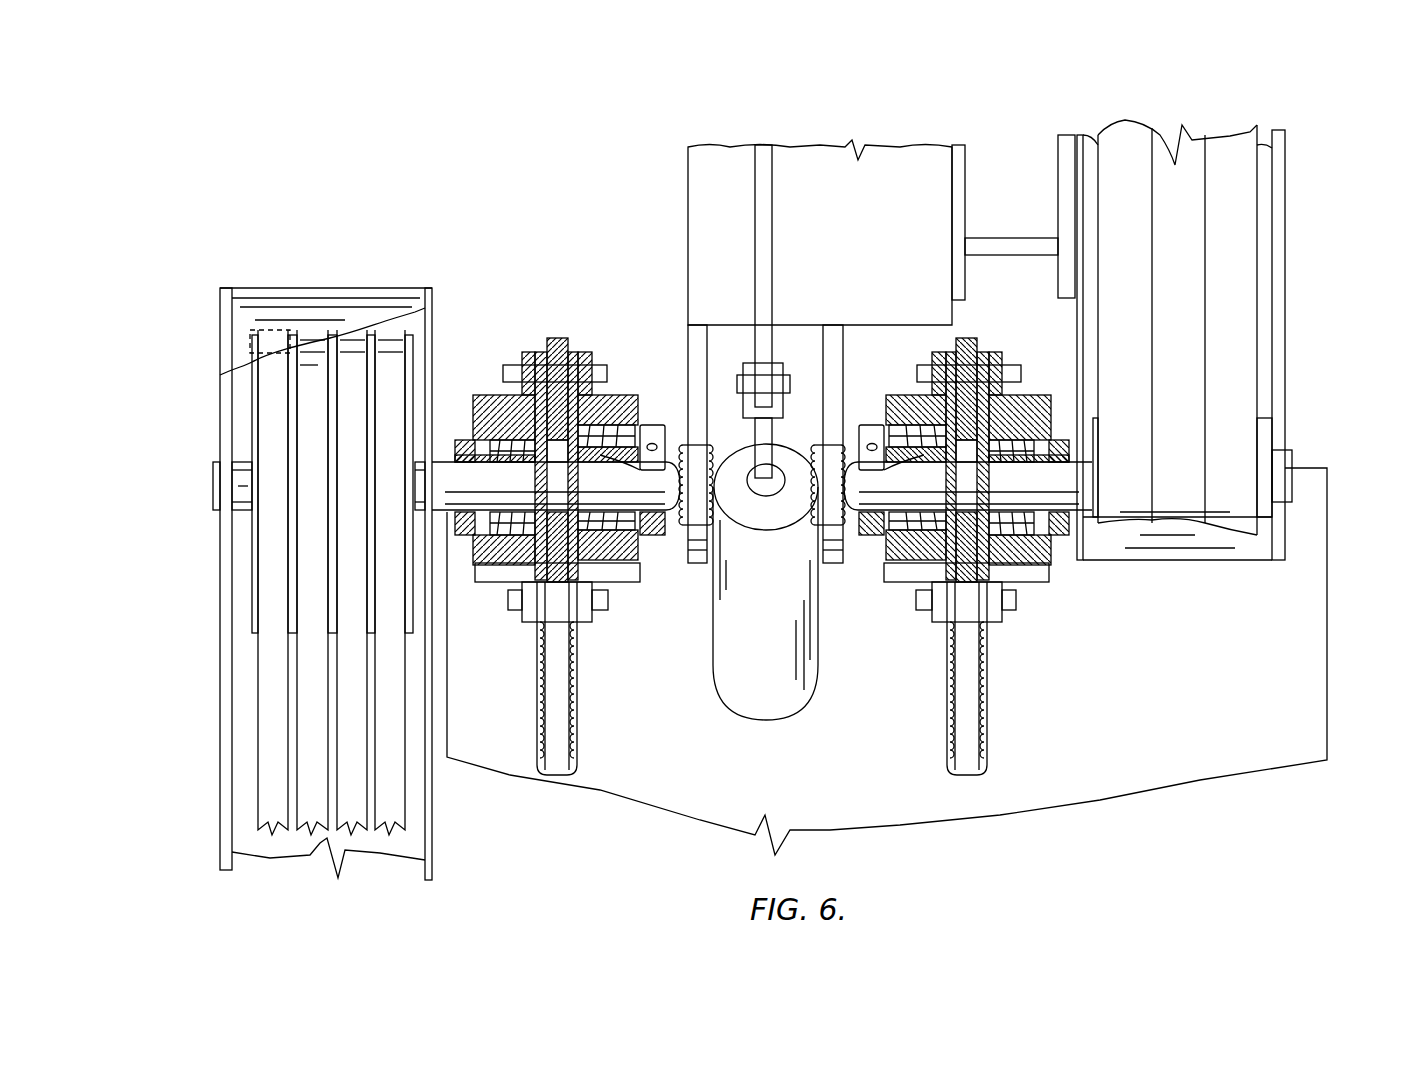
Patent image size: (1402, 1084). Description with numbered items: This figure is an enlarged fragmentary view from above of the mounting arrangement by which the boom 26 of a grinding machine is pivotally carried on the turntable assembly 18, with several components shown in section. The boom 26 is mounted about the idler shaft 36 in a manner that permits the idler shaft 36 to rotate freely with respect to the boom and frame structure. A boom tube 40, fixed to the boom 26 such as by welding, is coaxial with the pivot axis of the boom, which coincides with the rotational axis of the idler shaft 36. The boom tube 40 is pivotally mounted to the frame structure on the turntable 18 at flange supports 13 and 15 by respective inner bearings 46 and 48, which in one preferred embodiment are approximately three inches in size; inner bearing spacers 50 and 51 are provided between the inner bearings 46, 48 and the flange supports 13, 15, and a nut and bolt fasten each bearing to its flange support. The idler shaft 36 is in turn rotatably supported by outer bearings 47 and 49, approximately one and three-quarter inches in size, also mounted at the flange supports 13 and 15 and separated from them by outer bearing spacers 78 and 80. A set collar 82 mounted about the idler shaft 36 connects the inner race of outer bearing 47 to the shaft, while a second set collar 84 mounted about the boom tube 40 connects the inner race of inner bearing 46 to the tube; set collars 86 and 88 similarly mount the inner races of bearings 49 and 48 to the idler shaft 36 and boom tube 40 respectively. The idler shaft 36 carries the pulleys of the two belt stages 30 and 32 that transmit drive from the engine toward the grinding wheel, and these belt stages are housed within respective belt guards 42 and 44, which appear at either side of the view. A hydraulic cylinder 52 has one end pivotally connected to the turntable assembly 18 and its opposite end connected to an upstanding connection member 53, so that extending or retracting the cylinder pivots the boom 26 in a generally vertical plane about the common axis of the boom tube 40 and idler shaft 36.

The flange support 13 is at (577, 730).
The flange support 15 is at (990, 728).
The turntable assembly 18 is at (1335, 765).
The boom 26 is at (688, 180).
The belt stage 30 is at (1290, 400).
The belt stage 32 is at (262, 780).
The idler shaft 36 is at (215, 468).
The boom tube 40 is at (672, 440).
The belt guard 42 is at (1225, 560).
The belt guard 44 is at (242, 290).
The inner bearing 46 is at (615, 582).
The outer bearing 47 is at (495, 585).
The inner bearing 48 is at (900, 590).
The outer bearing 49 is at (1030, 590).
The inner bearing spacer 50 is at (585, 342).
The inner bearing spacer 51 is at (945, 340).
The hydraulic cylinder 52 is at (713, 660).
The connection member 53 is at (772, 290).
The outer bearing spacer 78 is at (535, 345).
The outer bearing spacer 80 is at (985, 345).
The set collar 82 is at (462, 536).
The set collar 84 is at (648, 536).
The set collar 86 is at (1060, 540).
The set collar 88 is at (872, 548).